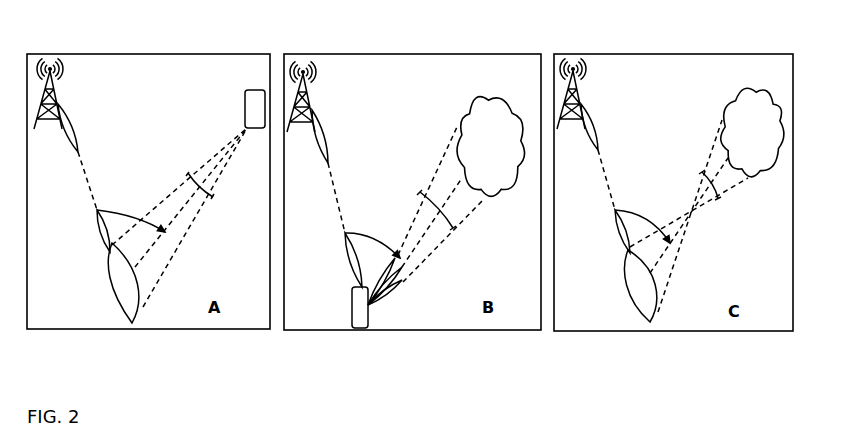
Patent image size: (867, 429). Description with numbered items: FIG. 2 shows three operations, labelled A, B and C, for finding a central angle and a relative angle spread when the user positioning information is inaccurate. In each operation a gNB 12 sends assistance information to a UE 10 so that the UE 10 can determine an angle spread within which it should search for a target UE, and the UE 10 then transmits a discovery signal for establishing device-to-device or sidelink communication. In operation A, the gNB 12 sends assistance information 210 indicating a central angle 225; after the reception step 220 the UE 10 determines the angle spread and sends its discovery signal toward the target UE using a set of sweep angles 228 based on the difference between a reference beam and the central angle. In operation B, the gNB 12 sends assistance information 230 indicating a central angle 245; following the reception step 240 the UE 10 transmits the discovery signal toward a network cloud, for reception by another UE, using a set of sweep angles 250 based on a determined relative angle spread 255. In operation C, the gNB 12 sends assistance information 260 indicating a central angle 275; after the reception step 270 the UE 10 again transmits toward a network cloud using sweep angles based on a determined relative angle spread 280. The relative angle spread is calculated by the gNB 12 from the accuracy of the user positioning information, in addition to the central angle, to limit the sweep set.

The UE 10 is at (323, 198).
The gNB 12 is at (345, 95).
The assistance information 210 is at (85, 157).
The reception step 220 is at (156, 225).
The central angle 225 is at (131, 207).
The set of sweep angles 228 is at (213, 198).
The assistance information 230 is at (338, 171).
The reception step 240 is at (336, 260).
The central angle 245 is at (372, 234).
The set of sweep angles 250 is at (425, 216).
The relative angle spread 255 is at (458, 222).
The assistance information 260 is at (606, 157).
The reception step 270 is at (666, 221).
The central angle 275 is at (642, 214).
The relative angle spread 280 is at (719, 201).